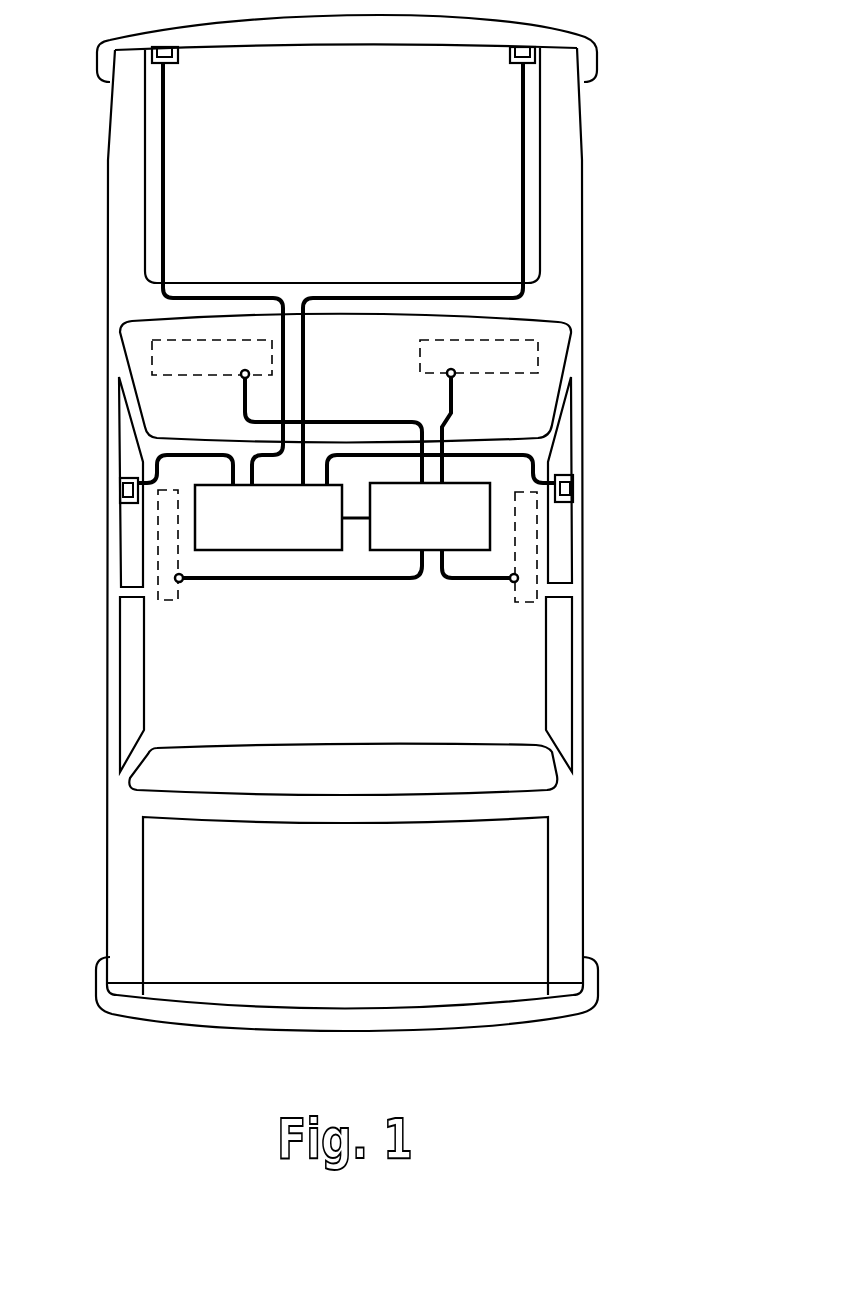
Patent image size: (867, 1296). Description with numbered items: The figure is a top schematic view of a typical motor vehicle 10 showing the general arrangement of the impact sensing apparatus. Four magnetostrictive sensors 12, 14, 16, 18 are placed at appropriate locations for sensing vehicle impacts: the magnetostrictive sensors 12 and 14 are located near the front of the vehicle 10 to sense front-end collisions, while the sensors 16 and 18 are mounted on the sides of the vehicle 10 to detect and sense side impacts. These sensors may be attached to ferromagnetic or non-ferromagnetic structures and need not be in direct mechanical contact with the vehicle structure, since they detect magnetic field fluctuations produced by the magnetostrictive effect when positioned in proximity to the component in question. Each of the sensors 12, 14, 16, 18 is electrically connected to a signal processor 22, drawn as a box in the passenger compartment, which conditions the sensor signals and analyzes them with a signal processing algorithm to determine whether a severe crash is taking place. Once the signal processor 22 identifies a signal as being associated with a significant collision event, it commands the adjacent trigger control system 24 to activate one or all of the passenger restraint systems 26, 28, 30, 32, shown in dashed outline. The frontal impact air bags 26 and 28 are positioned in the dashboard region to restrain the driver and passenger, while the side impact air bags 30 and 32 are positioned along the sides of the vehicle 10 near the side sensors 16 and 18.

The motor vehicle 10 is at (593, 243).
The magnetostrictive sensor 12 is at (178, 55).
The magnetostrictive sensor 14 is at (510, 55).
The magnetostrictive sensor 16 is at (128, 475).
The magnetostrictive sensor 18 is at (563, 475).
The signal processor 22 is at (278, 552).
The trigger control system 24 is at (393, 552).
The frontal impact air bag 26 is at (168, 338).
The frontal impact air bag 28 is at (525, 338).
The side impact air bag 30 is at (158, 537).
The side impact air bag 32 is at (535, 538).